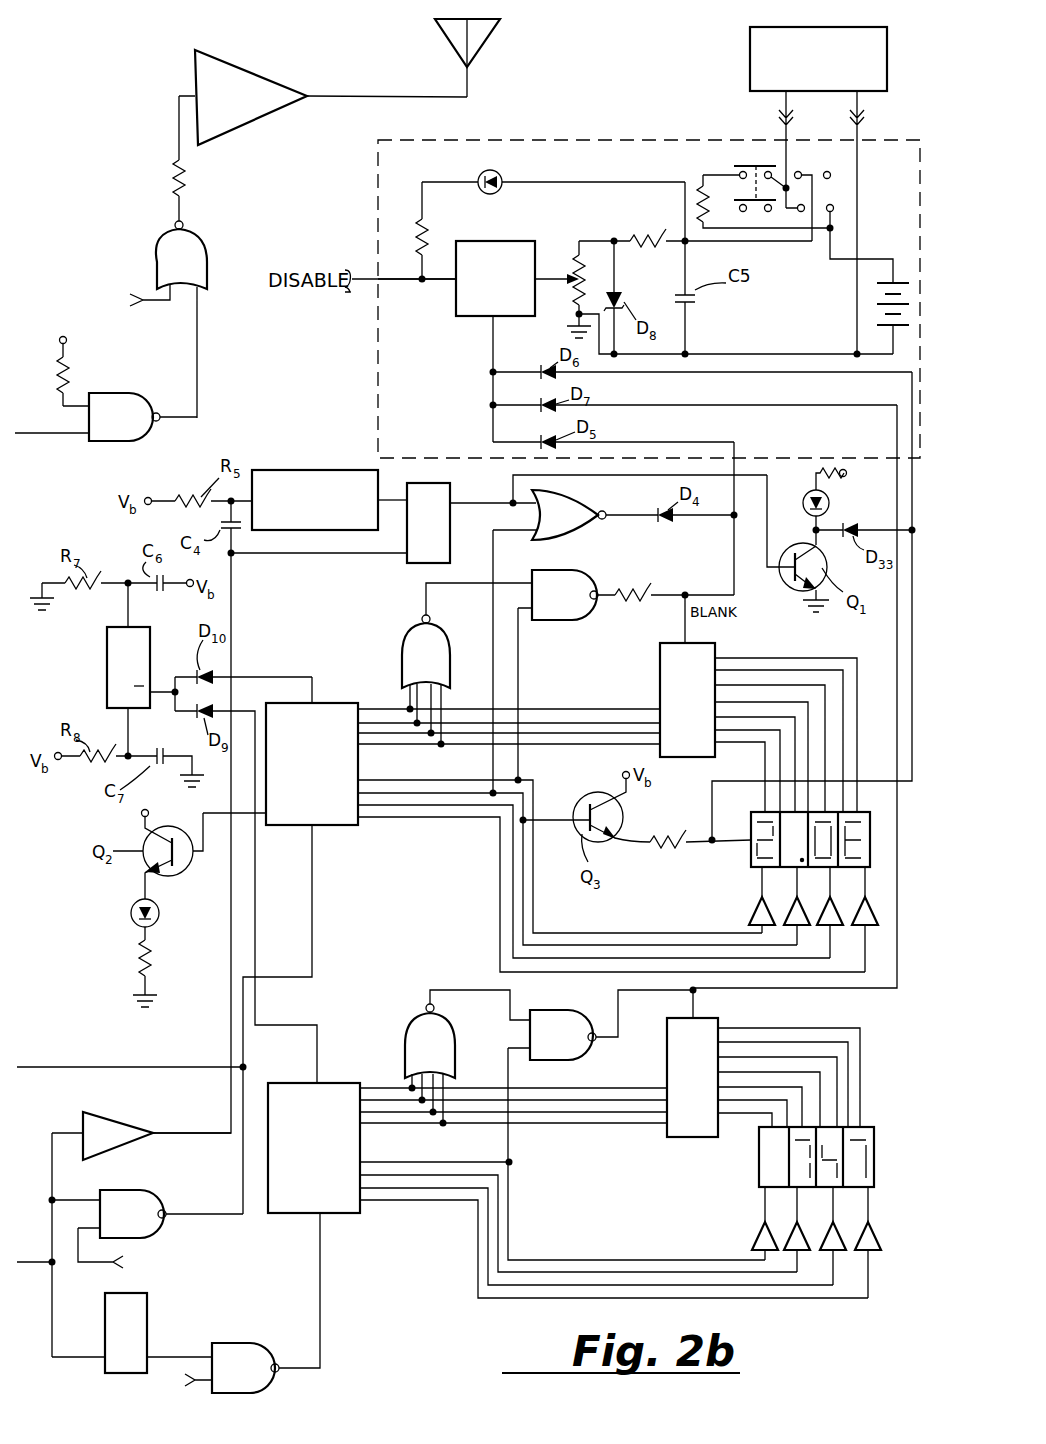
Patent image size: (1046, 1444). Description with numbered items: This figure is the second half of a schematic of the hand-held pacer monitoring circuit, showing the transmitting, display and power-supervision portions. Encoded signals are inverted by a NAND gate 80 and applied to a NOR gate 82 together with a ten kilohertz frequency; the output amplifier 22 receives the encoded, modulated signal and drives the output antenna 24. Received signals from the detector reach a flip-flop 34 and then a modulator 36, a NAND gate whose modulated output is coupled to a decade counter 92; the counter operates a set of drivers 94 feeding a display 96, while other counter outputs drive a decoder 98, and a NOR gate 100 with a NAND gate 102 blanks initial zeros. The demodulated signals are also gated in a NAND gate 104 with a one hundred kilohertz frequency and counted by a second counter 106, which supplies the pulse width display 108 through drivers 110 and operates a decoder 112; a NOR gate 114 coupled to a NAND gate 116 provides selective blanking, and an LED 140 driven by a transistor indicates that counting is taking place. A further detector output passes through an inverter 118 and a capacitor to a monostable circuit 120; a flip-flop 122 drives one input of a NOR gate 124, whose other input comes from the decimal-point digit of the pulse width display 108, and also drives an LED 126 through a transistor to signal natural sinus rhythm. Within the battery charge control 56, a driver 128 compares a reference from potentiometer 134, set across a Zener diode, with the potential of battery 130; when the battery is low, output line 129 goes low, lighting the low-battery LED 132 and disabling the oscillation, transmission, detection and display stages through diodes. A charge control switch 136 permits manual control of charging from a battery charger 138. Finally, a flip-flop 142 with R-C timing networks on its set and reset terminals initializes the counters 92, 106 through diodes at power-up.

The output amplifier 22 is at (243, 86).
The output antenna 24 is at (484, 36).
The flip-flop 34 is at (143, 1300).
The modulator 36 is at (243, 1342).
The battery charge control 56 is at (578, 132).
The NAND gate 80 is at (120, 404).
The NOR gate 82 is at (177, 252).
The decade counter 92 is at (340, 1200).
The drivers 94 is at (755, 1232).
The display 96 is at (875, 1152).
The decoder 98 is at (667, 1060).
The NOR gate 100 is at (418, 1038).
The NAND gate 102 is at (548, 1018).
The NAND gate 104 is at (135, 1205).
The second counter 106 is at (335, 818).
The pulse width display 108 is at (750, 853).
The drivers 110 is at (748, 910).
The decoder 112 is at (660, 680).
The NOR gate 114 is at (412, 652).
The NAND gate 116 is at (565, 608).
The inverter 118 is at (125, 1123).
The monostable circuit 120 is at (300, 470).
The flip-flop 122 is at (441, 555).
The NOR gate 124 is at (594, 525).
The LED 126 is at (804, 499).
The driver 128 is at (526, 244).
The output line 129 is at (404, 283).
The battery 130 is at (900, 281).
The LED 132 is at (479, 175).
The potentiometer 134 is at (572, 285).
The charge control switch 136 is at (821, 192).
The battery charger 138 is at (750, 38).
The LED 140 is at (131, 913).
The flip-flop 142 is at (107, 640).